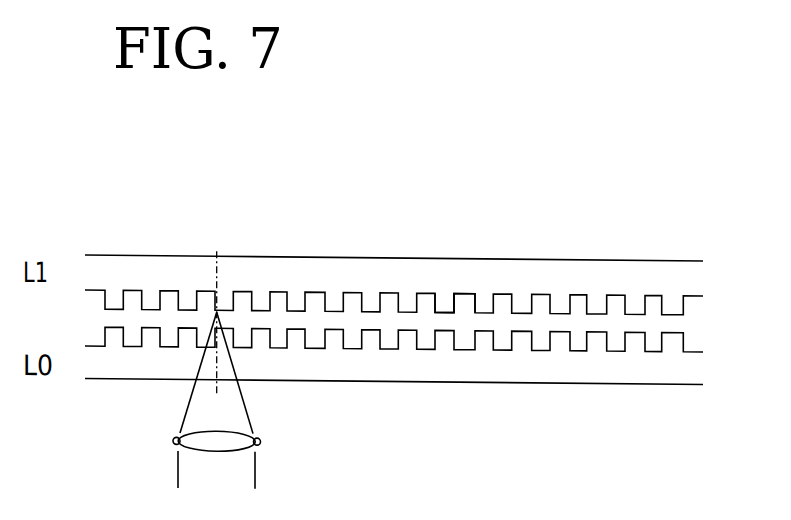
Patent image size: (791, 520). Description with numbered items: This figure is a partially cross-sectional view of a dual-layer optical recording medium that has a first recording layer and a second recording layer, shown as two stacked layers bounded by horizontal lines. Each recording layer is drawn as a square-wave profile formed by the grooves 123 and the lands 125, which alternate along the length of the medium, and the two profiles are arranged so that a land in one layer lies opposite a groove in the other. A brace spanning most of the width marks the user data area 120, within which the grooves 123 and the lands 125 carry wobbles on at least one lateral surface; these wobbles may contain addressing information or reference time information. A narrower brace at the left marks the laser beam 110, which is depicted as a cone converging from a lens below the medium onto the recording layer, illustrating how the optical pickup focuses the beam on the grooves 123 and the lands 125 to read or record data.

The laser beam 110 is at (212, 242).
The user data area 120 is at (698, 243).
The grooves 123 is at (448, 309).
The lands 125 is at (458, 290).